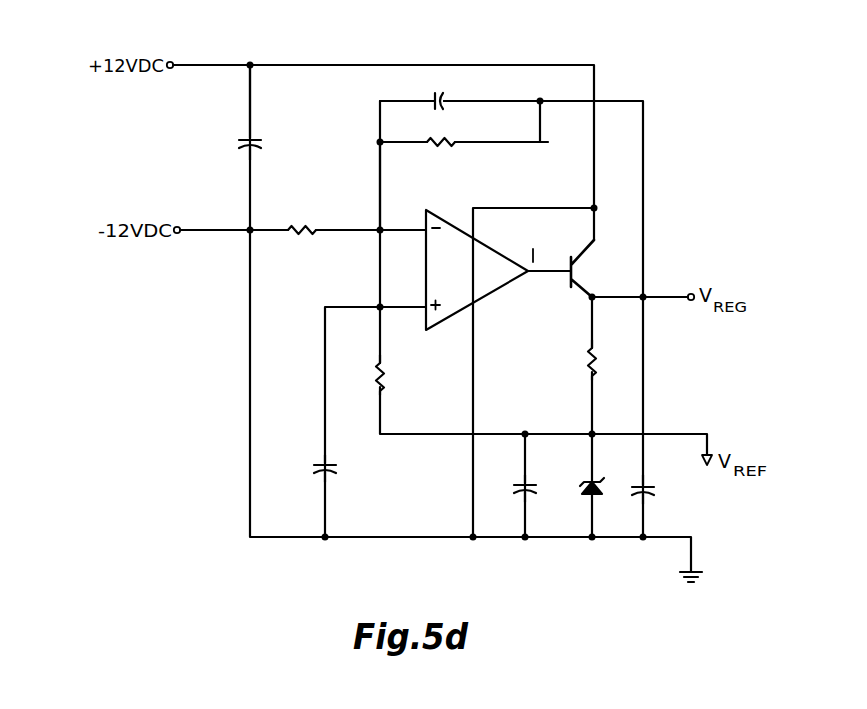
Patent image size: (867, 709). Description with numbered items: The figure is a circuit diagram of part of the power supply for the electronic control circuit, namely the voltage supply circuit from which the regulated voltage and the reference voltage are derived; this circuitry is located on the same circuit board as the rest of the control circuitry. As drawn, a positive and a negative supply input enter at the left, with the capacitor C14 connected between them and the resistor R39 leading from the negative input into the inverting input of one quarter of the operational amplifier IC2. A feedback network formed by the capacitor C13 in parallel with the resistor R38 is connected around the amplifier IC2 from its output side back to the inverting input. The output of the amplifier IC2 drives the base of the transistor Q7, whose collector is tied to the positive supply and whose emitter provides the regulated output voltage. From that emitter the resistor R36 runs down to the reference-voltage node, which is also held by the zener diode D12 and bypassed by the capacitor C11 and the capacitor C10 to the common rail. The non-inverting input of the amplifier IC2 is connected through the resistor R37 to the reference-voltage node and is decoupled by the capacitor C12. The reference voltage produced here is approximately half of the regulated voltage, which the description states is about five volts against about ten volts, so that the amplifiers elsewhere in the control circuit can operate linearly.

The capacitor C14 is at (270, 112).
The capacitor C13 is at (439, 92).
The resistor R38 is at (484, 133).
The resistor R39 is at (302, 219).
The operational amplifier 1/4 IC2 is at (446, 280).
The transistor Q7 is at (590, 268).
The resistor R36 is at (613, 360).
The resistor R37 is at (403, 375).
The capacitor C12 is at (343, 469).
The capacitor C11 is at (537, 482).
The zener diode D12 is at (604, 500).
The capacitor C10 is at (662, 489).